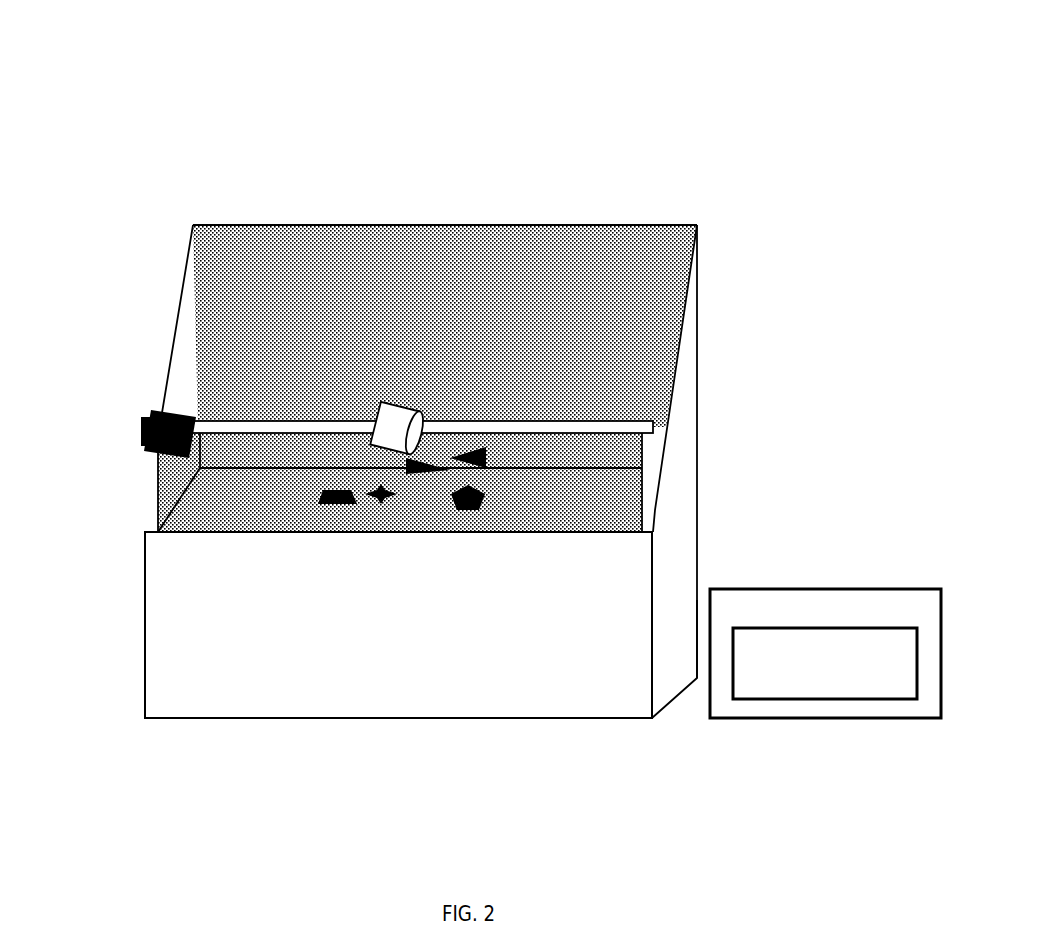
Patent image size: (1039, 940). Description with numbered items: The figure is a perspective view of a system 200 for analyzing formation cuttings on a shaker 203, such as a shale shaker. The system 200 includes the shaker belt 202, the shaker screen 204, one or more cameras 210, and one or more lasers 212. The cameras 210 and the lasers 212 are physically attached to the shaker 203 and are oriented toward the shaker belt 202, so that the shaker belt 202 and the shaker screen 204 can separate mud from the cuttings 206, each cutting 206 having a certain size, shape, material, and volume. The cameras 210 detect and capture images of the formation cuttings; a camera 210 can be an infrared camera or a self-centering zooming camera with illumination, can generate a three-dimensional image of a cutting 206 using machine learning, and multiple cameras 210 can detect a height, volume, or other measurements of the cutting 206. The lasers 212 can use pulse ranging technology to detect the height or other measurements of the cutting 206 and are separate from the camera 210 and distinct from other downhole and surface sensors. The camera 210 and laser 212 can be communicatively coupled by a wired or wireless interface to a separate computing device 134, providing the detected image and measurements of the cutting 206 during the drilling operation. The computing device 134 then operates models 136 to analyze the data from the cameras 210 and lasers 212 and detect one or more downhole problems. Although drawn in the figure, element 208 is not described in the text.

The system 200 is at (482, 367).
The shaker belt 202 is at (681, 217).
The shaker 203 is at (712, 372).
The shaker screen 204 is at (362, 247).
The cutting 206 is at (453, 526).
The side panel 208 is at (689, 536).
The camera 210 is at (366, 458).
The laser 212 is at (122, 442).
The computing device 134 is at (825, 653).
The models 136 is at (825, 663).